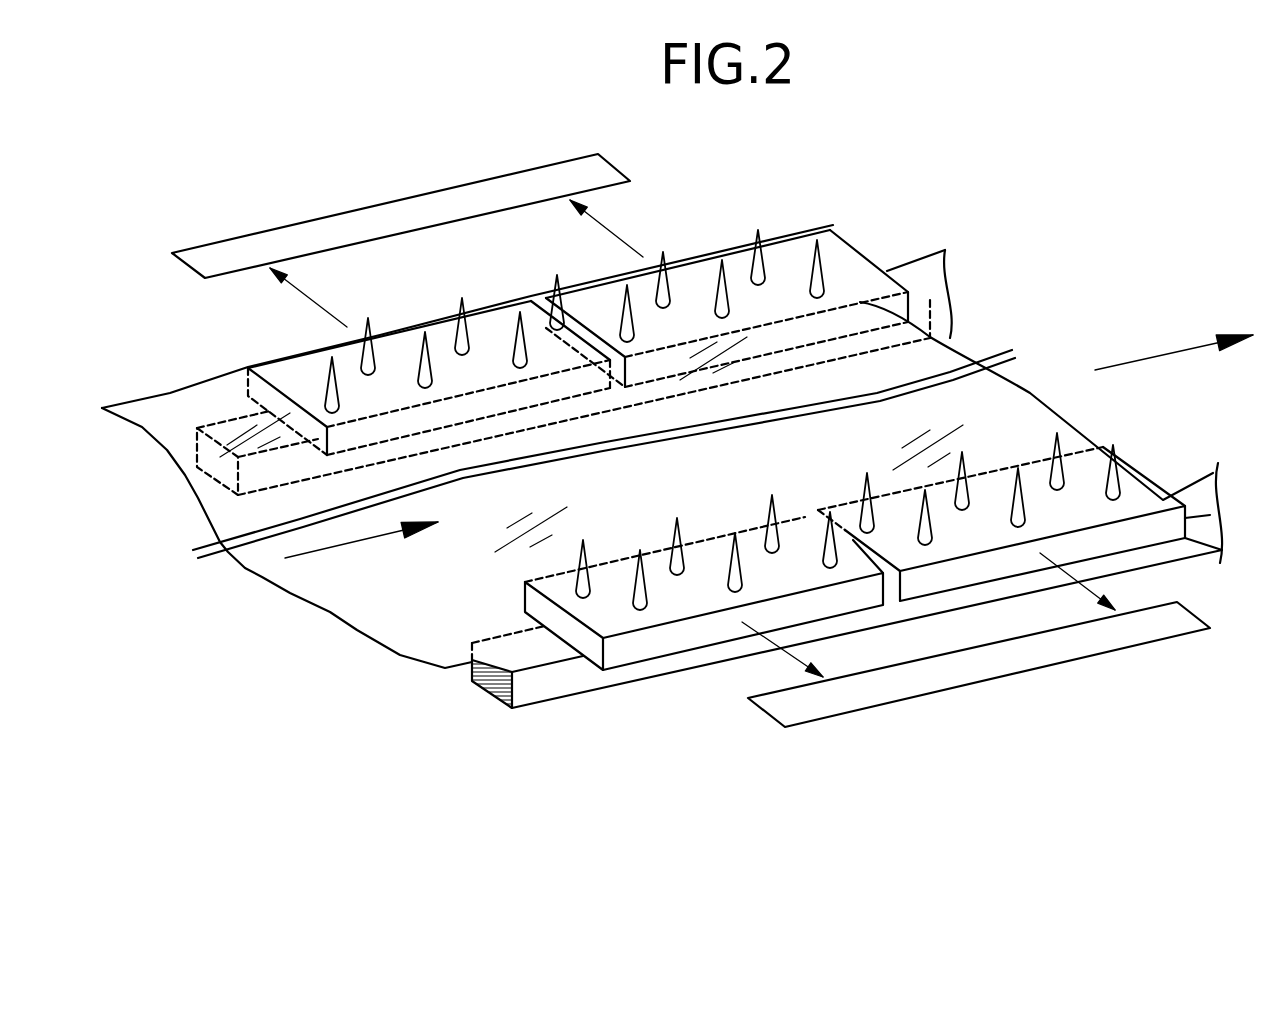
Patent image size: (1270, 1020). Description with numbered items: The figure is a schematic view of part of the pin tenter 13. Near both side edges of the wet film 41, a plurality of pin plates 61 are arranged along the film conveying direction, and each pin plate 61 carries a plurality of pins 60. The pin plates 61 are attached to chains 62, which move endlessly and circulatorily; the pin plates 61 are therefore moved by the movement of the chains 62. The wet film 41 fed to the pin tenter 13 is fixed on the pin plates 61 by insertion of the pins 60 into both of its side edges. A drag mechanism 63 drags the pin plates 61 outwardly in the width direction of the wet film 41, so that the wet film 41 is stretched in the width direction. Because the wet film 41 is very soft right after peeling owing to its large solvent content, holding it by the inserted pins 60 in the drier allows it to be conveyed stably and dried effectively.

The pin tenter 13 is at (761, 379).
The wet film 41 is at (322, 612).
The pins 60 is at (425, 332).
The pin plates 61 is at (290, 383).
The chains 62 is at (217, 427).
The drag mechanism 63 is at (402, 198).